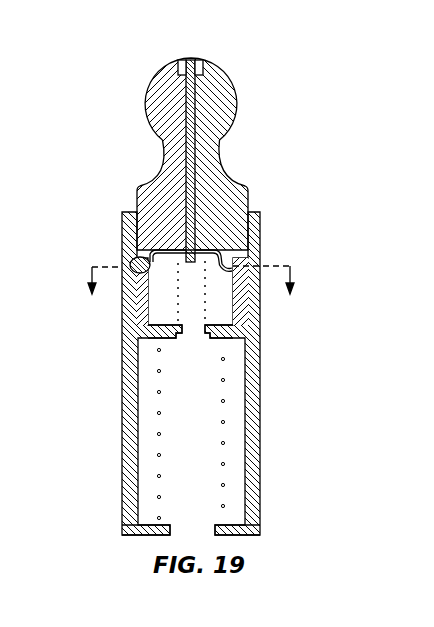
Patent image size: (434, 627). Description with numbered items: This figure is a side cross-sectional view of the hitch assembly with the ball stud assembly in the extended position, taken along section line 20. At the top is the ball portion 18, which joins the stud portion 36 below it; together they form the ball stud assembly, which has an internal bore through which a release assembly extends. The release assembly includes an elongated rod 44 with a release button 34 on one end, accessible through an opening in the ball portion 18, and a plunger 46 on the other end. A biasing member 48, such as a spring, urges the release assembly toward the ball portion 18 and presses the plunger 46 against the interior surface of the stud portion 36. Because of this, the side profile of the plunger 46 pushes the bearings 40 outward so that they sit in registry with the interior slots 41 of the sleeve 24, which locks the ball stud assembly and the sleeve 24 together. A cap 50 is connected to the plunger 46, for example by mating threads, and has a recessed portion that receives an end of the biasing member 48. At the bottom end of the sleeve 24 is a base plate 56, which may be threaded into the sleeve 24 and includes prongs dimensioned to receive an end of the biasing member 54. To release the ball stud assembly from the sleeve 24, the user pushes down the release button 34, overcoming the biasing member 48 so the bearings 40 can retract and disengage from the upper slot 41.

The ball portion 18 is at (259, 66).
The section line 20- 20 is at (195, 295).
The sleeve 24 is at (195, 387).
The release button 34 is at (188, 60).
The stud portion 36 is at (243, 206).
The bearings 40 is at (131, 262).
The interior slots 41 is at (136, 424).
The rod 44 is at (196, 160).
The plunger 46 is at (234, 256).
The biasing member 48 is at (206, 318).
The cap 50 is at (218, 332).
The biasing member 54 is at (224, 445).
The base plate 56 is at (232, 536).